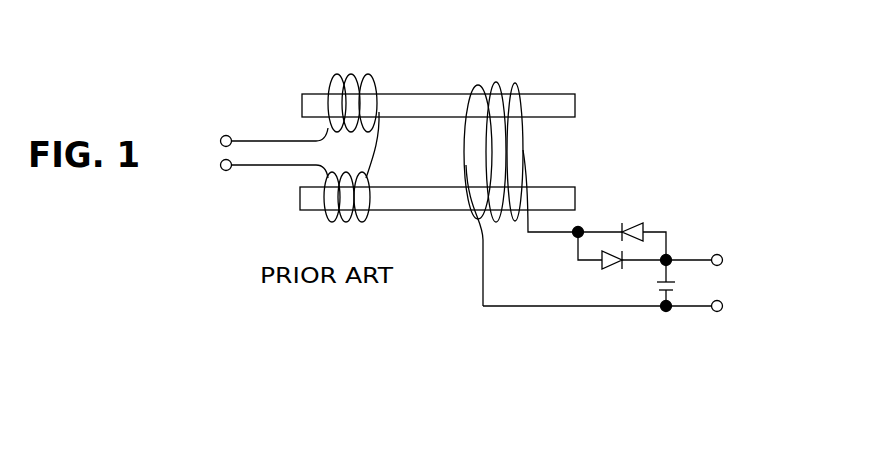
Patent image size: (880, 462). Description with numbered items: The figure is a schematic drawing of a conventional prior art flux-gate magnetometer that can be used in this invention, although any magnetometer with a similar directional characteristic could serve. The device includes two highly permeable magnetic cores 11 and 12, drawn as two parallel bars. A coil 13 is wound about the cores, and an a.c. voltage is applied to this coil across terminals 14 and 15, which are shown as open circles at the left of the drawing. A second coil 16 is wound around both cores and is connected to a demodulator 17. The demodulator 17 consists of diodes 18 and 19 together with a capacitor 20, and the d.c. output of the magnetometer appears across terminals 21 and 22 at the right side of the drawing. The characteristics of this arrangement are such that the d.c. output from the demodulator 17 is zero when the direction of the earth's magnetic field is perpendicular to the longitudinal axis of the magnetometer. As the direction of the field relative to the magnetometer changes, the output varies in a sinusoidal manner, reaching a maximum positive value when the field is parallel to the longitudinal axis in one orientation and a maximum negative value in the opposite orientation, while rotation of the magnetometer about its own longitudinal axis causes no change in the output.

The magnetic core 11 is at (578, 106).
The magnetic core 12 is at (578, 194).
The coil 13 is at (352, 72).
The terminal 14 is at (226, 135).
The terminal 15 is at (226, 171).
The coil 16 is at (524, 82).
The demodulator 17 is at (670, 220).
The diode 18 is at (634, 226).
The diode 19 is at (602, 266).
The capacitor 20 is at (679, 288).
The terminal 21 is at (719, 254).
The terminal 22 is at (722, 310).